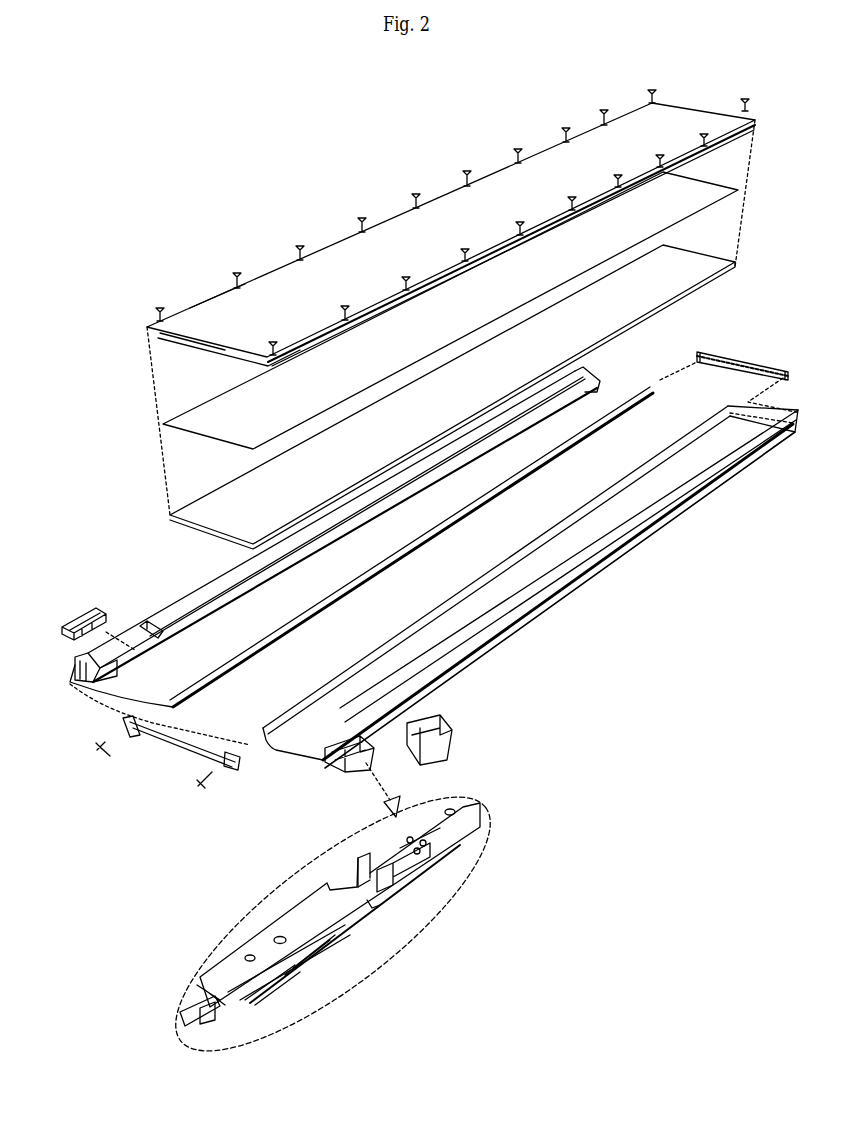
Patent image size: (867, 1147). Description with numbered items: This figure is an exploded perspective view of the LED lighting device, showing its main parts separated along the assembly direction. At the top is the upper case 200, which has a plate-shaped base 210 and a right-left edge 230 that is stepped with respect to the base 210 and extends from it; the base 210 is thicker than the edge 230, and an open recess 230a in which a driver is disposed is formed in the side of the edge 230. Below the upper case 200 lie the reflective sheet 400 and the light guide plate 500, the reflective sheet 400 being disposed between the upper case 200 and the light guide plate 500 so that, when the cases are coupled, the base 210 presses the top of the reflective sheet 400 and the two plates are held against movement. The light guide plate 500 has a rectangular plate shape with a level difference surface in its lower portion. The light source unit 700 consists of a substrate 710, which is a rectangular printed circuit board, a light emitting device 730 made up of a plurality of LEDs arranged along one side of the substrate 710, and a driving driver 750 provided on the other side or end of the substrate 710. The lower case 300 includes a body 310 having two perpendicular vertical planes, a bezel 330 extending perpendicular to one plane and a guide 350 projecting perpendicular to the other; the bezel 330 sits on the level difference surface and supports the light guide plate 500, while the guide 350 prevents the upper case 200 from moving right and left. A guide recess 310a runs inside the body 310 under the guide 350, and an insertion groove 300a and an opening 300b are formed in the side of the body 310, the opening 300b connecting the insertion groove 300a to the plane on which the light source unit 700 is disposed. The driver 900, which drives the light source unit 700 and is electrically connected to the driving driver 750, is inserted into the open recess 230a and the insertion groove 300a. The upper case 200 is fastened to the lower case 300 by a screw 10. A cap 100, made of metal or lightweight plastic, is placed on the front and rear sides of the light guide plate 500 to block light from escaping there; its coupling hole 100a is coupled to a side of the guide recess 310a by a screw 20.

The screw 10 is at (232, 270).
The screw 20 is at (98, 753).
The cap 100 is at (174, 751).
The coupling hole 100a is at (124, 751).
The upper case 200 is at (407, 234).
The base 210 is at (205, 344).
The edge 230 is at (422, 234).
The open recess 230a is at (215, 298).
The lower case 300 is at (321, 903).
The insertion groove 300a is at (372, 905).
The opening 300b is at (343, 883).
The body 310 is at (200, 997).
The guide recess 310a is at (313, 967).
The bezel 330 is at (185, 1023).
The guide 350 is at (263, 1000).
The reflective sheet 400 is at (162, 426).
The light guide plate 500 is at (170, 517).
The light source unit 700 is at (341, 556).
The substrate 710 is at (185, 688).
The light emitting device 730 is at (207, 711).
The driving driver 750 is at (317, 697).
The driver 900 is at (79, 612).